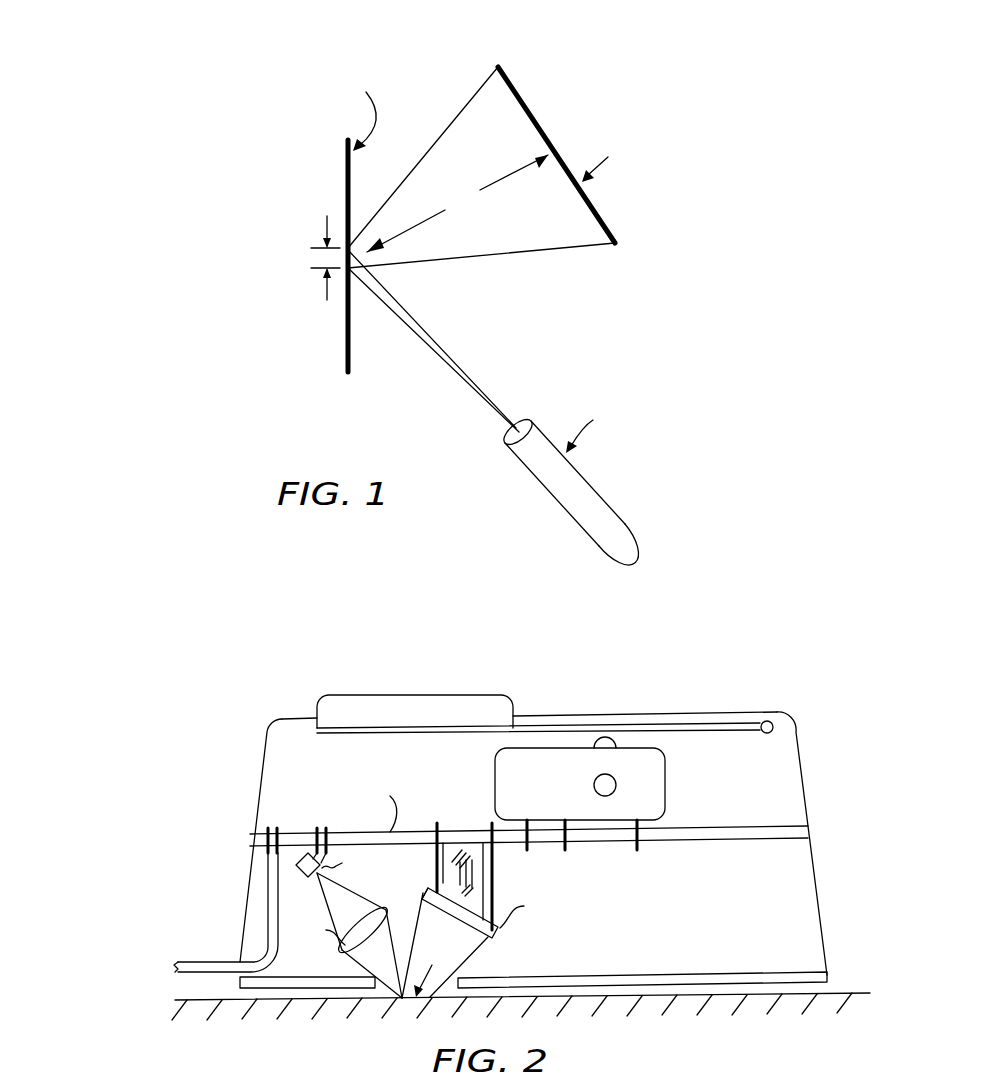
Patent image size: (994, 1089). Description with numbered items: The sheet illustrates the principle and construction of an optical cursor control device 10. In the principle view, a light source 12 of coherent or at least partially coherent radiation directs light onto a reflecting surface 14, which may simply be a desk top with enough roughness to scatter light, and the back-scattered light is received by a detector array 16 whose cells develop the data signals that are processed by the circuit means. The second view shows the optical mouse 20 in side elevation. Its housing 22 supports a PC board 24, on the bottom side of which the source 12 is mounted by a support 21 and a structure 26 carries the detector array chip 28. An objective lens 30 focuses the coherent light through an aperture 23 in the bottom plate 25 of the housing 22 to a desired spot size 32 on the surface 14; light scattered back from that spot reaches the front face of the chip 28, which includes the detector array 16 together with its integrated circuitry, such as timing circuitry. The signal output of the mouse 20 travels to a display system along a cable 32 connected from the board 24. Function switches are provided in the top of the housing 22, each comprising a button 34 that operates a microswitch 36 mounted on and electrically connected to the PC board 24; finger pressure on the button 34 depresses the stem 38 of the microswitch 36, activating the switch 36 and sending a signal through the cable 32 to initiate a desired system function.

In FIG. 1, the optical cursor control device 10 is at (557, 98).
In FIG. 1, the light source 12 is at (600, 483).
In FIG. 2, the light source 12 is at (341, 877).
In FIG. 1, the reflecting surface 14 is at (351, 167).
In FIG. 2, the reflecting surface 14 is at (851, 990).
In FIG. 1, the detector array 16 is at (616, 234).
In FIG. 2, the detector array 16 is at (497, 933).
In FIG. 2, the optical mouse 20 is at (743, 692).
In FIG. 2, the support 21 is at (295, 836).
In FIG. 2, the housing 22 is at (806, 777).
In FIG. 2, the aperture 23 is at (377, 983).
In FIG. 2, the PC board 24 is at (705, 825).
In FIG. 2, the bottom plate 25 is at (758, 975).
In FIG. 2, the structure 26 is at (470, 876).
In FIG. 2, the detector array chip 28 is at (426, 890).
In FIG. 2, the objective lens 30 is at (342, 950).
In FIG. 2, the spot / cable 32 is at (205, 960).
In FIG. 2, the button 34 is at (467, 693).
In FIG. 2, the microswitch 36 is at (493, 778).
In FIG. 2, the stem 38 is at (610, 737).